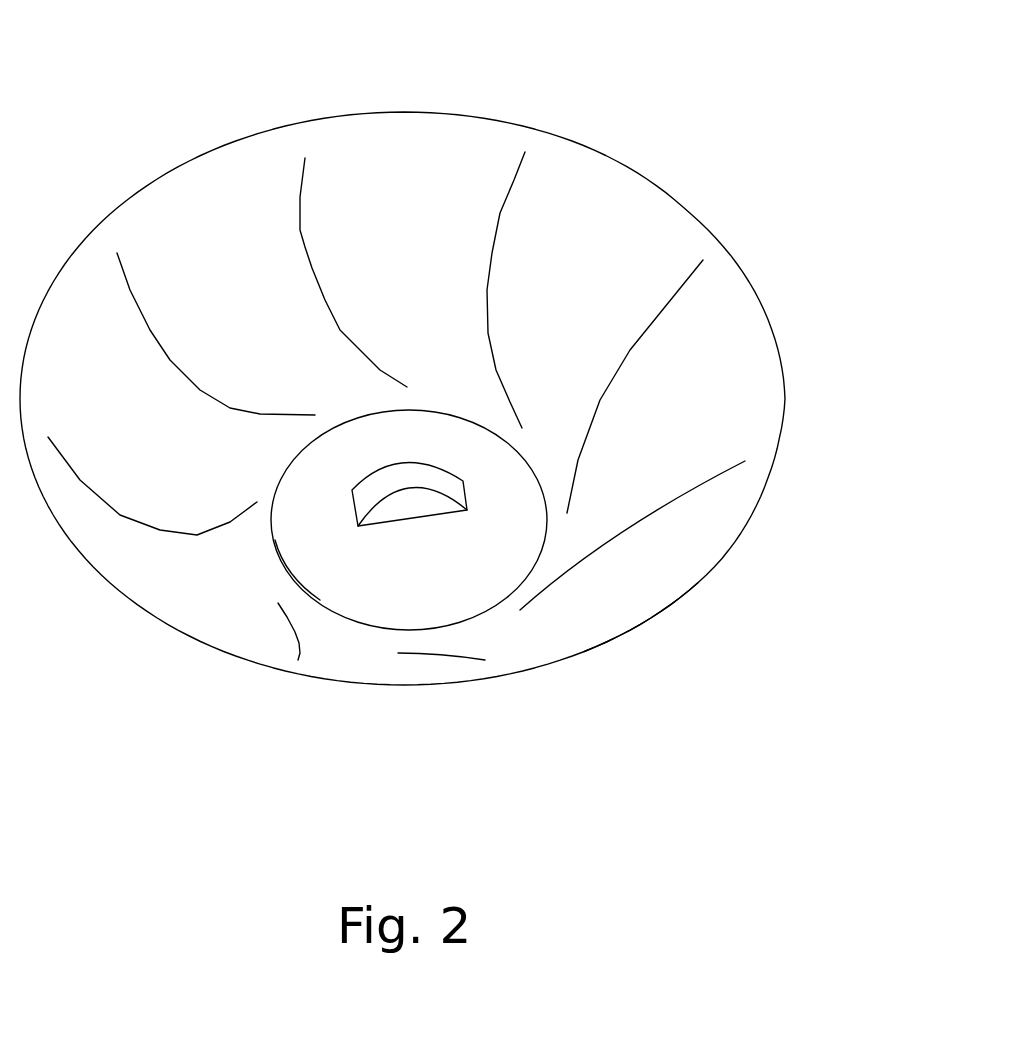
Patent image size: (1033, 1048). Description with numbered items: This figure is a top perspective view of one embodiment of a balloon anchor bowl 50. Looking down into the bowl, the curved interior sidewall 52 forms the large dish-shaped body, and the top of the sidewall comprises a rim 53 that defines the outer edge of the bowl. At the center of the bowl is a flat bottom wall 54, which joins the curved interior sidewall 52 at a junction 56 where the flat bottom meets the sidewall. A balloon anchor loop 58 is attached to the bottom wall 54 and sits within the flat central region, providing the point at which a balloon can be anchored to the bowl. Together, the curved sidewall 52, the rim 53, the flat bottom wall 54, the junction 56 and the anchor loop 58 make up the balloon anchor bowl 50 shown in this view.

The balloon anchor bowl 50 is at (468, 118).
The interior sidewall 52 is at (568, 243).
The rim 53 is at (625, 627).
The bottom wall 54 is at (403, 586).
The junction 56 is at (288, 573).
The balloon anchor loop 58 is at (388, 470).